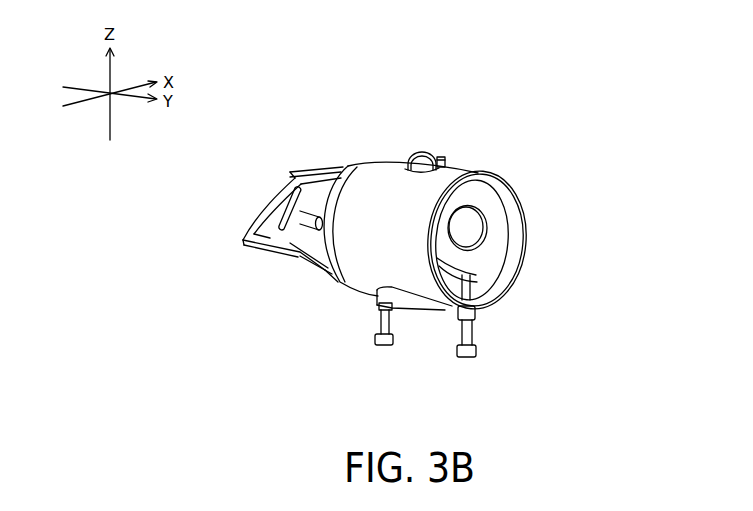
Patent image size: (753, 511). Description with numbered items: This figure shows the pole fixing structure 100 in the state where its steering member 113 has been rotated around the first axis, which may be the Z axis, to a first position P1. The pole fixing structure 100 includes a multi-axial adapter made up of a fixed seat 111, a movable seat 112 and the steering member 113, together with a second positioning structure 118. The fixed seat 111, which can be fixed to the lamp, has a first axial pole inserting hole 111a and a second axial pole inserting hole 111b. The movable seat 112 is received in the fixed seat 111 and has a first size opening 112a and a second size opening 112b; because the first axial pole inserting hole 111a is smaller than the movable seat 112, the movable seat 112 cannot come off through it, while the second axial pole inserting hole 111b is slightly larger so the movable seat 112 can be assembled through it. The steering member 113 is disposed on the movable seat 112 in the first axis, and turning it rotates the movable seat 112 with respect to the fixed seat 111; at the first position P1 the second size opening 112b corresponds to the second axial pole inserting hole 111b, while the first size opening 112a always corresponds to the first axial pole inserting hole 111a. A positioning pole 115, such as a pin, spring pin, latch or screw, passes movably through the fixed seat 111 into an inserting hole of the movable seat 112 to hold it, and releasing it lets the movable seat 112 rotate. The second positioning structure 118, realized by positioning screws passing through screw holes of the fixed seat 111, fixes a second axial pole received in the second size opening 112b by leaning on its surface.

The pole fixing structure 100 is at (228, 124).
The fixed seat 111 is at (384, 166).
The first axial pole inserting hole 111a is at (401, 320).
The second axial pole inserting hole 111b is at (495, 267).
The movable seat 112 is at (462, 194).
The first size opening 112a is at (434, 321).
The second size opening 112b is at (478, 254).
The steering member 113 is at (424, 160).
The positioning pole 115 is at (446, 162).
The second positioning structure 118 is at (476, 338).
The first position P1 is at (442, 107).